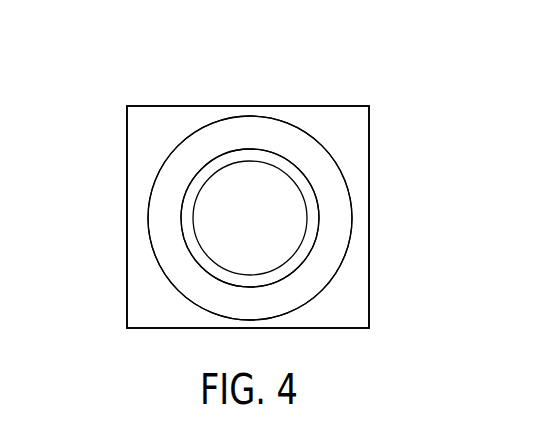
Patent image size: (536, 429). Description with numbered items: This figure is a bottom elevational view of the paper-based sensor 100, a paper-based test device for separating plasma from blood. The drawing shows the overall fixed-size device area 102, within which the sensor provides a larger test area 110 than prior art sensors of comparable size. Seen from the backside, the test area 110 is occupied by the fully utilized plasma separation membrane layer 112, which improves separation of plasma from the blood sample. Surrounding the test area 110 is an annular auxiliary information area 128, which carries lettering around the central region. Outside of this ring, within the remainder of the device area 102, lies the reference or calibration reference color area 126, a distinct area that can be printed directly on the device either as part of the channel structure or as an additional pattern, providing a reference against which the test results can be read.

The paper-based sensor 100 is at (393, 74).
The device area 102 is at (126, 315).
The test area 110 is at (278, 208).
The plasma separation membrane layer 112 is at (212, 219).
The reference color area 126 is at (338, 295).
The auxiliary information area 128 is at (275, 118).